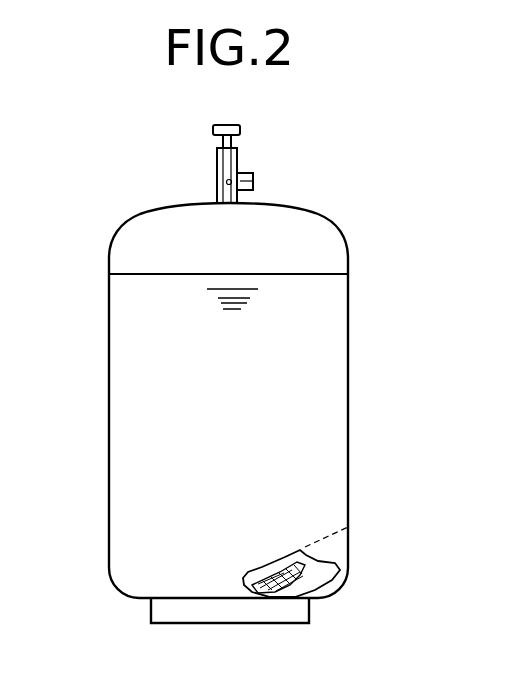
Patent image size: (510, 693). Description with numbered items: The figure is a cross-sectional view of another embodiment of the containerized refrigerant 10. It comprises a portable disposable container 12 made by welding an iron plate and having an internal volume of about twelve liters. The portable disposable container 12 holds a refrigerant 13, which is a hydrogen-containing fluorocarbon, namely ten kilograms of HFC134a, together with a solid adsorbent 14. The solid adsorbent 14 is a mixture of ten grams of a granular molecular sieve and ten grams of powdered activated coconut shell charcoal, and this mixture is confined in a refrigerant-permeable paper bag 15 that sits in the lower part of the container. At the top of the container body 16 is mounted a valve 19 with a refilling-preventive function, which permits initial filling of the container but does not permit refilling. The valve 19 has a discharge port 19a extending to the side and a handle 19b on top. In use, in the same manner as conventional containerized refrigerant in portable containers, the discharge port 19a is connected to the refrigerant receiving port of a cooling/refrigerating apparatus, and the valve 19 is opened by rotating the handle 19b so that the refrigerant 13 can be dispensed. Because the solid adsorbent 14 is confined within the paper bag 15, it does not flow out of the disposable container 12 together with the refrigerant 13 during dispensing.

The containerized refrigerant 10 is at (90, 239).
The portable disposable container 12 is at (108, 362).
The refrigerant 13 is at (150, 458).
The solid adsorbent 14 is at (349, 523).
The refrigerant-permeable paper bag 15 is at (348, 571).
The container body 16 is at (340, 238).
The valve with a refilling-preventive function 19 is at (261, 144).
The discharge port 19a is at (253, 180).
The handle 19b is at (232, 105).